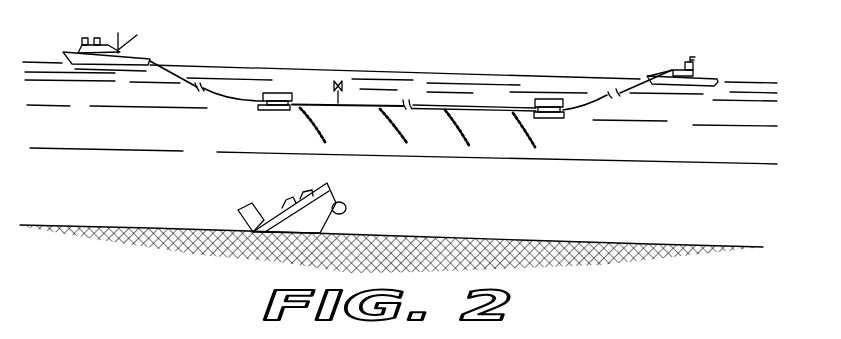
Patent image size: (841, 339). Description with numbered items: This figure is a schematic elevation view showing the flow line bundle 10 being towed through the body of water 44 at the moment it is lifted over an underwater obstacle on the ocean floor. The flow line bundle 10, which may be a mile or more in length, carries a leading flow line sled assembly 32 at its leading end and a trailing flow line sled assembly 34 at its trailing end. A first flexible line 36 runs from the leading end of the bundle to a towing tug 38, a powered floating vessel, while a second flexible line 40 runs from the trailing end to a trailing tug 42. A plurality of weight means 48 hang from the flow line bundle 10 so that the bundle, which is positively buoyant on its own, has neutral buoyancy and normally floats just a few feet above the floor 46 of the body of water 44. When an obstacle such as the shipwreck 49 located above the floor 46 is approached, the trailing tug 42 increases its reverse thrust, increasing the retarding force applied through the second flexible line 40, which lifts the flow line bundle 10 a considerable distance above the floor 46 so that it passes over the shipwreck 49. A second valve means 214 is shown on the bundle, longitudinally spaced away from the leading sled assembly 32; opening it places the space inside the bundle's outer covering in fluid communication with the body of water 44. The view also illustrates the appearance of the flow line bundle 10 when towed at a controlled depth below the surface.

The flow line bundle 10 is at (426, 97).
The leading flow line sled assembly 32 is at (279, 89).
The trailing flow line sled assembly 34 is at (551, 92).
The first flexible line 36 is at (221, 99).
The towing tug 38 is at (143, 57).
The second flexible line 40 is at (626, 92).
The trailing tug 42 is at (702, 76).
The body of water 44 is at (717, 113).
The floor 46 is at (468, 238).
The weight means 48 is at (317, 130).
The shipwreck 49 is at (315, 210).
The second valve means 214 is at (343, 83).